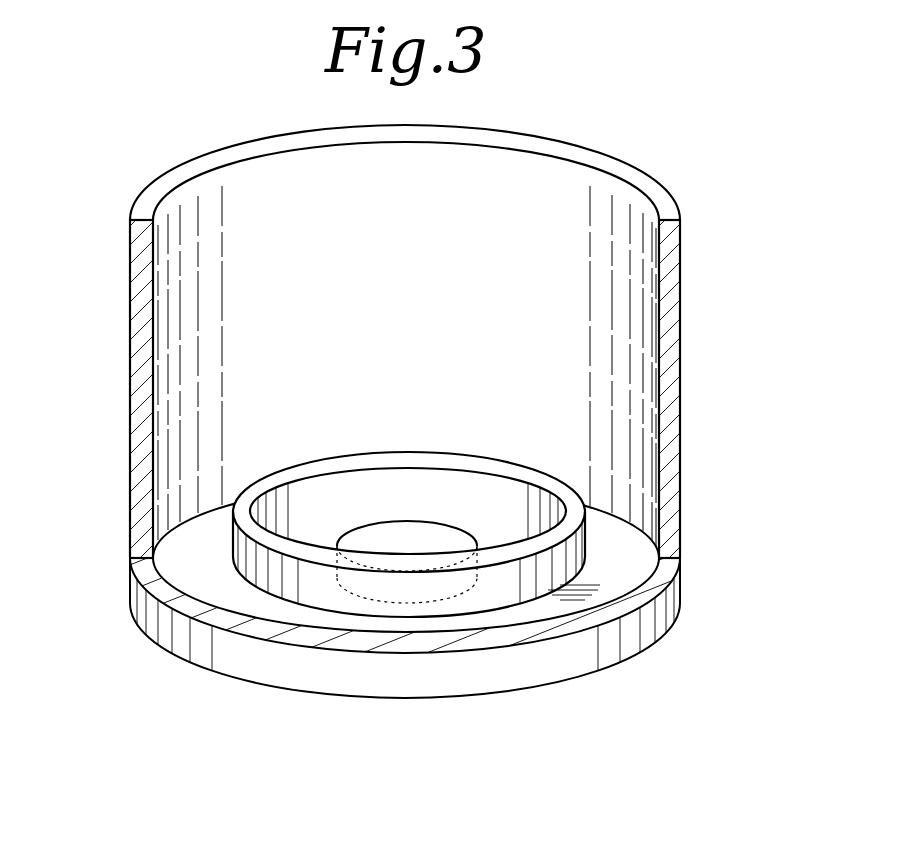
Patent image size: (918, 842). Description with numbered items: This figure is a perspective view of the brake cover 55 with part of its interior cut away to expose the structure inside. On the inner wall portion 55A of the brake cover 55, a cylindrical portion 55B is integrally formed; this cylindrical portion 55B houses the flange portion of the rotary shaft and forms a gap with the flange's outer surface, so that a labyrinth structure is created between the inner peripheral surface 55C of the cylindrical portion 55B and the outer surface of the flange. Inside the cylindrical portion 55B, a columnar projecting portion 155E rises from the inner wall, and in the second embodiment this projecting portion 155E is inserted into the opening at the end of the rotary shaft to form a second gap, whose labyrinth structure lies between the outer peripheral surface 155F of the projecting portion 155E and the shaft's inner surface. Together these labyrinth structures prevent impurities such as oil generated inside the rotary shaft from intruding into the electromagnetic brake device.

The brake cover 55 is at (677, 353).
The inner wall portion 55A is at (623, 559).
The cylindrical portion 55B is at (573, 490).
The inner peripheral surface 55C is at (375, 502).
The projecting portion 155E is at (377, 538).
The outer peripheral surface 155F is at (312, 560).